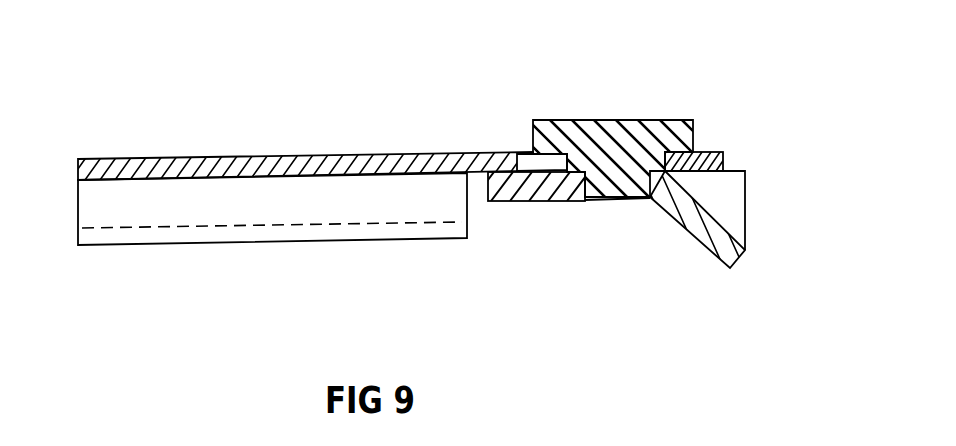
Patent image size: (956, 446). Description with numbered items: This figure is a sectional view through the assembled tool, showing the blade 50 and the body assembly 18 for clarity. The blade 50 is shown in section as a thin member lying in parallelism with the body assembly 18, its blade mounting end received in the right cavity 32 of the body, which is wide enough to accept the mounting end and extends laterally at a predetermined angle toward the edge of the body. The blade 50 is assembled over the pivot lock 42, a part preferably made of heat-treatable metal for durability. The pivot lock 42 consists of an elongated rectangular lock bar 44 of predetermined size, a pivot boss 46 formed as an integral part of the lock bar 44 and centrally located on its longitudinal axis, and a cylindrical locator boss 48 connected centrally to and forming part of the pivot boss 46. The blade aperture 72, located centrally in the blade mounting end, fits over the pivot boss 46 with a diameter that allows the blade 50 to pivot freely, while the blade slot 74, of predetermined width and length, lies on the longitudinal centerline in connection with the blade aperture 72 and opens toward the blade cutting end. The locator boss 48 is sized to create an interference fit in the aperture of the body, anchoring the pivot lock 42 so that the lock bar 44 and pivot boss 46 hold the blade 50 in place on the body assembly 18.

The blade 50 is at (193, 159).
The blade slot 74 is at (525, 162).
The blade aperture 72 is at (545, 166).
The lock bar 44 is at (550, 133).
The pivot lock 42 is at (695, 133).
The pivot boss 46 is at (723, 161).
The right cavity 32 is at (747, 251).
The locator boss 48 is at (623, 283).
The body assembly 18 is at (525, 226).